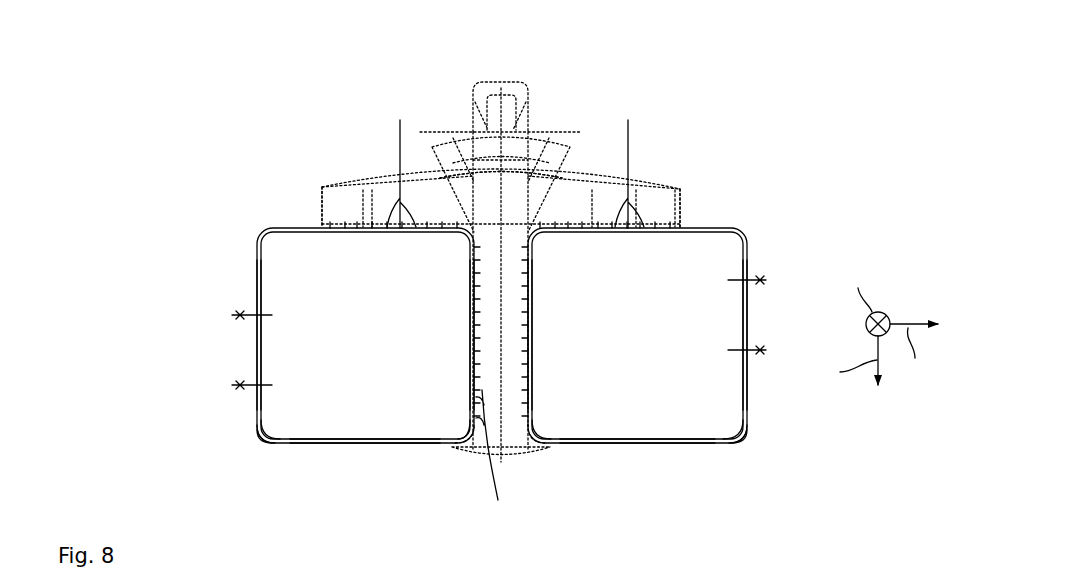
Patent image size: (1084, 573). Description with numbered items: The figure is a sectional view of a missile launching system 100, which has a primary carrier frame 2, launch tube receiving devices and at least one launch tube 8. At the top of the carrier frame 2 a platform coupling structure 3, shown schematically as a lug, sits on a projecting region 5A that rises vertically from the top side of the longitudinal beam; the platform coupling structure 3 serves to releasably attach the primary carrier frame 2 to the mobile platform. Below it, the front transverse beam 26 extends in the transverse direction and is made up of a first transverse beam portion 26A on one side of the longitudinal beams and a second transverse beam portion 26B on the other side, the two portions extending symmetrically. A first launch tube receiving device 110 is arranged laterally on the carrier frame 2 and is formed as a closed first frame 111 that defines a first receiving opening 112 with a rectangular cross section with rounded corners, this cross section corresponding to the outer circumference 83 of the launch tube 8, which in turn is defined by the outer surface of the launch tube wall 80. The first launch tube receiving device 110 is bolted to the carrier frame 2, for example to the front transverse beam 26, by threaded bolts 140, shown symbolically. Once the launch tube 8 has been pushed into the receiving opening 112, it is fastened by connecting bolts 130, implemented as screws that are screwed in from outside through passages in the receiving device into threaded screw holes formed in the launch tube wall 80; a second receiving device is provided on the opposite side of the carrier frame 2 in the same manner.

The missile launching system 100 is at (124, 150).
The launch tube 8 is at (370, 449).
The outer circumference 83 is at (299, 449).
The first receiving opening 112 is at (270, 340).
The launch tube wall 80 is at (268, 440).
The closed first frame 111 is at (256, 438).
The first launch tube receiving device 110 is at (272, 452).
The connecting bolts 130 is at (240, 382).
The front transverse beam 26 is at (487, 162).
The first transverse beam portion 26A is at (343, 187).
The second transverse beam portion 26B is at (645, 189).
The platform coupling structure 3 is at (468, 77).
The projecting region 5A is at (548, 134).
The primary carrier frame 2 is at (578, 166).
The threaded bolts 140 is at (514, 314).